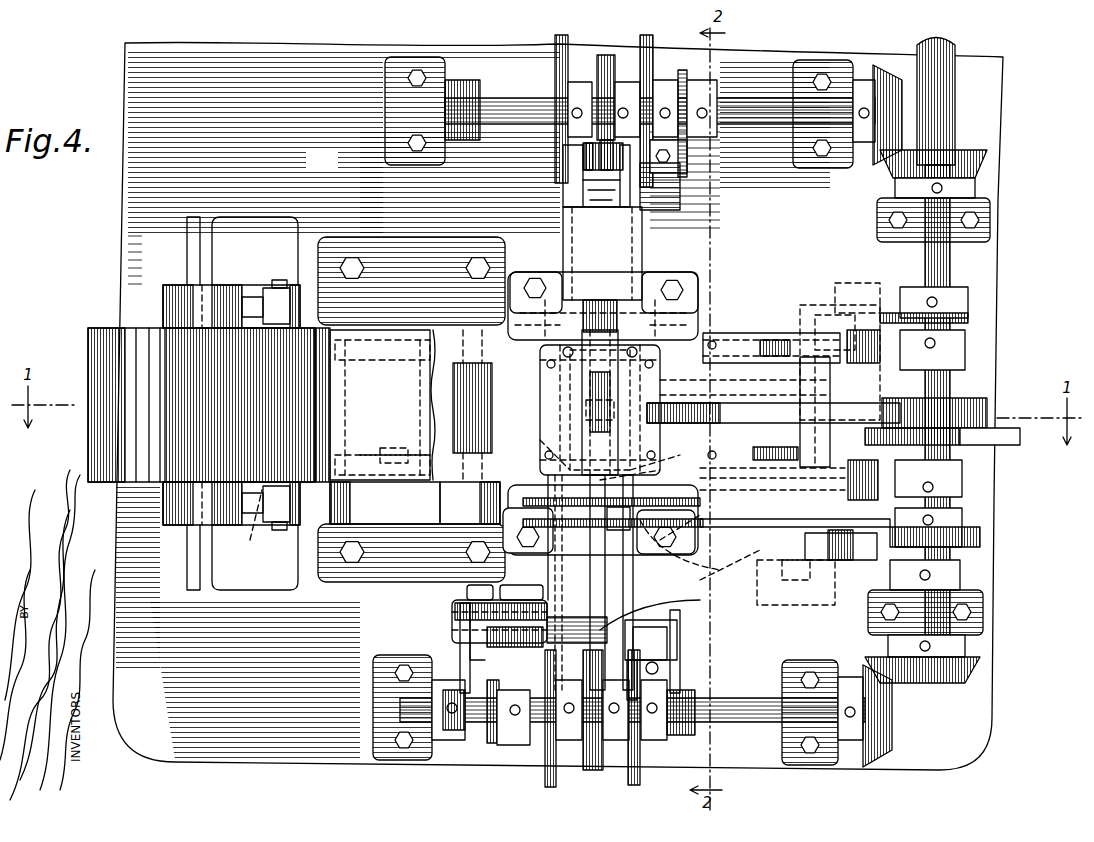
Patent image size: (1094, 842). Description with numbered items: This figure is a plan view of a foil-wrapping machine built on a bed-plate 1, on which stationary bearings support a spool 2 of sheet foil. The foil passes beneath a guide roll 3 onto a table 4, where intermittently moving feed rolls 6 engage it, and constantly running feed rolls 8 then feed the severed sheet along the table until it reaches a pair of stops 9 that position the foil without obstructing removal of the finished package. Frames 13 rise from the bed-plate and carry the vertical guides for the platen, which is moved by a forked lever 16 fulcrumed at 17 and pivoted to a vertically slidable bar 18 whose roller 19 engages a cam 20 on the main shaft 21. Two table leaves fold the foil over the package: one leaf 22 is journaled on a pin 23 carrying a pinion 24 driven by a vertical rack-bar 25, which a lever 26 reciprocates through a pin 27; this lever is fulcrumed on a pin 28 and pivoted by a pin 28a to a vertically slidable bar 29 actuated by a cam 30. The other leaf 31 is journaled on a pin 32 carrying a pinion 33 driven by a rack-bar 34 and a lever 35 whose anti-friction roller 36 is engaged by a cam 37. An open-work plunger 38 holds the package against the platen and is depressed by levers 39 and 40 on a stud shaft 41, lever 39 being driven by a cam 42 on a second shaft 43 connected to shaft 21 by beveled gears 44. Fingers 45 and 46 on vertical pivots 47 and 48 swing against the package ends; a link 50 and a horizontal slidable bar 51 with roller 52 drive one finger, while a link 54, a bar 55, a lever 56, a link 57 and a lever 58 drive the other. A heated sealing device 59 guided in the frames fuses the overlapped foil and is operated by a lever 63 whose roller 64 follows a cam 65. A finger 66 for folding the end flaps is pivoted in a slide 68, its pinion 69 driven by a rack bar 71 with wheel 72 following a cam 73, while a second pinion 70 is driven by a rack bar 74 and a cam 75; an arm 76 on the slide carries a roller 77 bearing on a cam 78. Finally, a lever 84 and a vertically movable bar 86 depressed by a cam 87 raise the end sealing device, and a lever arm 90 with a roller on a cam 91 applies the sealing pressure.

The bed-plate 1 is at (558, 406).
The spool 2 is at (201, 405).
The guide roll 3 is at (252, 523).
The table 4 is at (318, 468).
The feed rolls 6 is at (355, 405).
The feed rolls 8 is at (460, 382).
The stops 9 is at (712, 352).
The frames 13 is at (680, 328).
The lever 16 is at (675, 404).
The fulcrum 17 is at (845, 305).
The vertically slidable bar 18 is at (970, 300).
The roller 19 is at (968, 318).
The cam 20 is at (905, 242).
The shaft 21 is at (955, 265).
The leaf 22 is at (586, 410).
The pin or shaft 23 is at (546, 298).
The pinion 24 is at (556, 588).
The vertical rack-bar 25 is at (466, 532).
The lever 26 is at (660, 550).
The pin 27 is at (366, 555).
The pin 28 is at (795, 580).
The pin 28a is at (983, 600).
The vertically slidable bar 29 is at (960, 575).
The cam 30 is at (895, 560).
The leaf 31 is at (745, 377).
The pin 32 is at (657, 298).
The pinion 33 is at (660, 455).
The vertical rack-bar 34 is at (710, 527).
The lever 35 is at (772, 527).
The anti-friction roller 36 is at (962, 480).
The cam 37 is at (980, 537).
The plunger 38 is at (570, 393).
The lever 39 is at (410, 655).
The lever 40 is at (600, 560).
The stud shaft 41 is at (452, 612).
The cam 42 is at (493, 745).
The shaft 43 is at (730, 722).
The beveled gears 44 is at (930, 683).
The finger 45 is at (588, 435).
The finger 46 is at (620, 415).
The vertical pivot 47 is at (545, 450).
The vertical pivot 48 is at (665, 448).
The link 50 is at (623, 503).
The horizontal slidable bar 51 is at (760, 485).
The roller 52 is at (830, 470).
The link 54 is at (470, 490).
The horizontal slidable bar 55 is at (412, 490).
The lever 56 is at (407, 455).
The link 57 is at (782, 485).
The lever 58 is at (860, 500).
The sealing device 59 is at (600, 300).
The lever 63 is at (775, 418).
The anti-friction roller 64 is at (945, 428).
The cam 65 is at (1020, 436).
The finger 66 is at (610, 582).
The slide 68 is at (619, 582).
The pinion 69 is at (562, 590).
The pinion 70 is at (660, 560).
The rack bar 71 is at (547, 620).
The anti-friction wheel 72 is at (530, 650).
The cam 73 is at (553, 787).
The rack bar 74 is at (690, 605).
The cam 75 is at (637, 785).
The arm 76 is at (625, 635).
The anti-friction roller 77 is at (660, 668).
The cam 78 is at (598, 770).
The lever 84 is at (470, 650).
The vertically movable bar 86 is at (455, 742).
The cam 87 is at (442, 742).
The lever arm 90 is at (675, 655).
The cam 91 is at (683, 740).